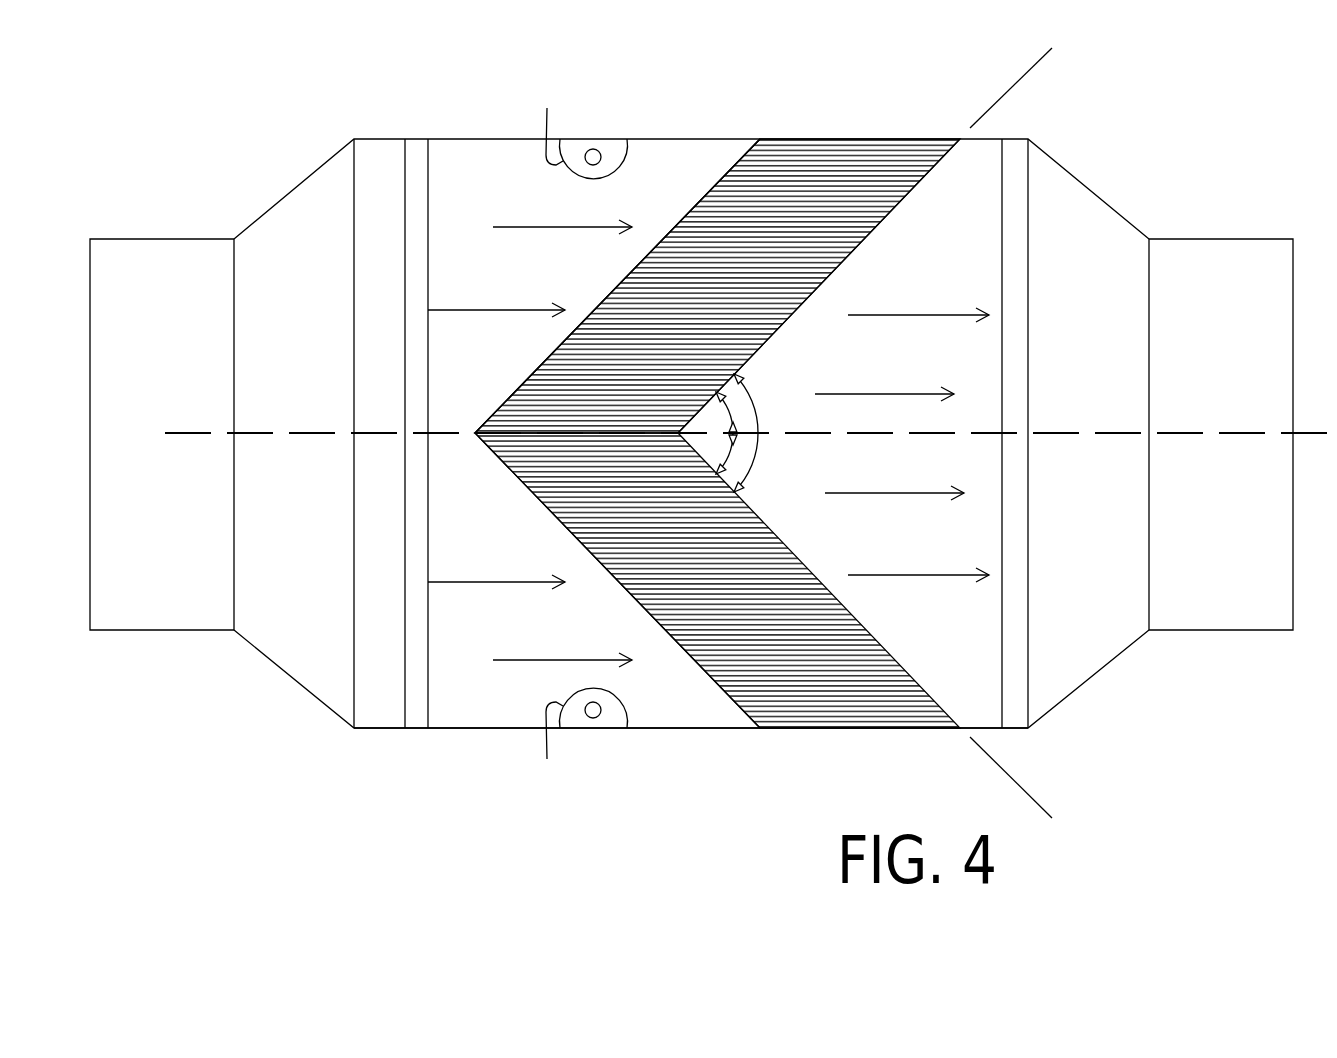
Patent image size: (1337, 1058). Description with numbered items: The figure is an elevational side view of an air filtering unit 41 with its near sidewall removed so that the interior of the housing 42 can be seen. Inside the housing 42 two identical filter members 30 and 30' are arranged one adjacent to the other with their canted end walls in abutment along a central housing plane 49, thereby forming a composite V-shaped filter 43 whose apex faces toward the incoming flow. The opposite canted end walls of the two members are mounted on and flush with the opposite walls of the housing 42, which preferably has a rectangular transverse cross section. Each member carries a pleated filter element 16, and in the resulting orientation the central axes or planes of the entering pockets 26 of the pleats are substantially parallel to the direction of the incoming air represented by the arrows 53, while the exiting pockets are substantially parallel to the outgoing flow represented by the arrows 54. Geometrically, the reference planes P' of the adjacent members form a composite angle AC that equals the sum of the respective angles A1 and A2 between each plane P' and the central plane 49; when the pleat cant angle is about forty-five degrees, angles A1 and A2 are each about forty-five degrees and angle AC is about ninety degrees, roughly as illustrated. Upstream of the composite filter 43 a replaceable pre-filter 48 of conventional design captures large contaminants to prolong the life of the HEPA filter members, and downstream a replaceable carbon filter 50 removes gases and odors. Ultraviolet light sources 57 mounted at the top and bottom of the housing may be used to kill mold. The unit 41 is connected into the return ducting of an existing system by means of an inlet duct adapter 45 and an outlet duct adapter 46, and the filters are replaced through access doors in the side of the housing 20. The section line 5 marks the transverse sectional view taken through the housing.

The air filtering unit 41 is at (305, 138).
The housing 42 is at (466, 737).
The composite V-shaped filter 43 is at (494, 360).
The inlet duct adapter 45 is at (160, 275).
The outlet duct adapter 46 is at (1223, 585).
The pre-filter 48 is at (415, 643).
The central housing plane 49 is at (293, 445).
The carbon filter 50 is at (1012, 302).
The incoming fluid flow arrows 53 is at (530, 426).
The outgoing fluid flow arrows 54 is at (902, 424).
The ultraviolet light source 57 is at (578, 445).
The section line 5- 5 is at (513, 195).
The filter element 16 is at (906, 203).
The housing 20 is at (790, 175).
The entering pocket 26 is at (872, 178).
The filter member 30 is at (617, 231).
The filter member 30' is at (617, 626).
The reference plane P' is at (1059, 430).
The first angle A1 is at (740, 463).
The second angle A2 is at (738, 405).
The composite angle AC is at (760, 418).